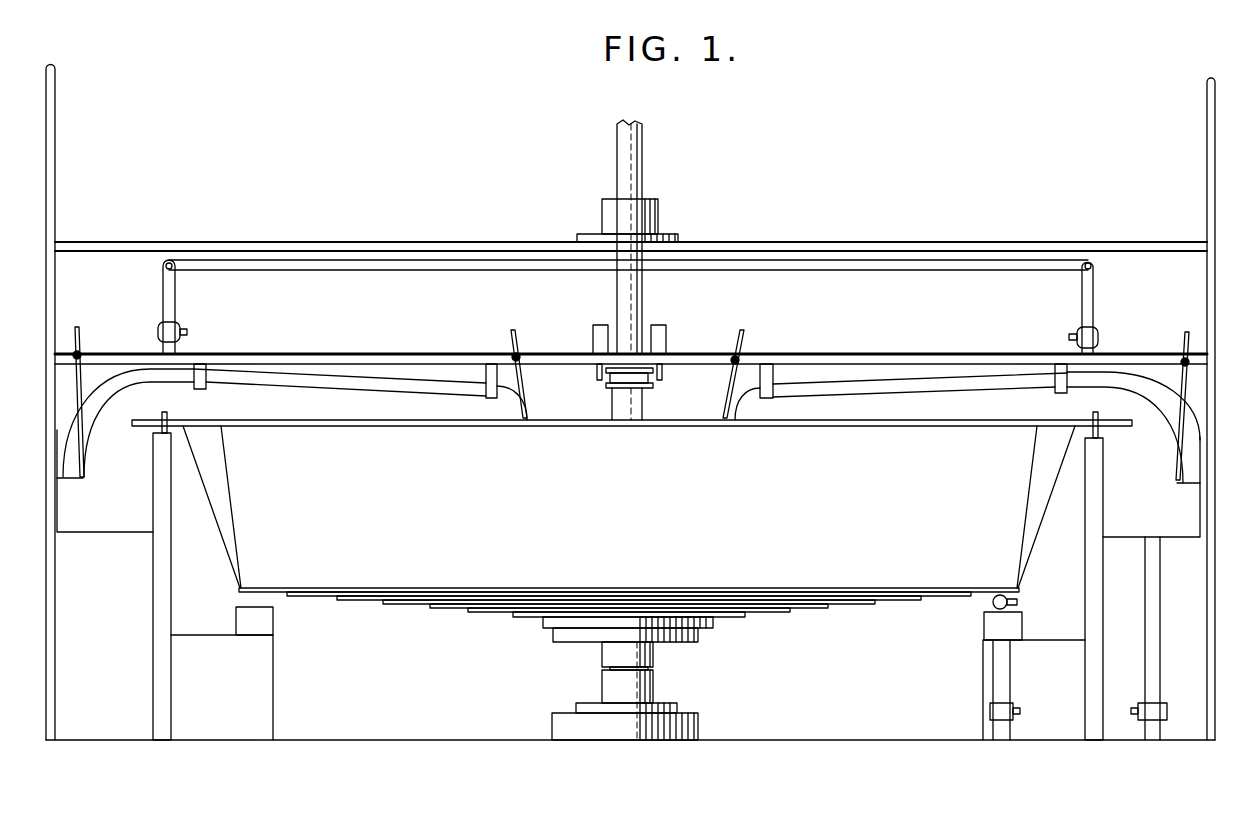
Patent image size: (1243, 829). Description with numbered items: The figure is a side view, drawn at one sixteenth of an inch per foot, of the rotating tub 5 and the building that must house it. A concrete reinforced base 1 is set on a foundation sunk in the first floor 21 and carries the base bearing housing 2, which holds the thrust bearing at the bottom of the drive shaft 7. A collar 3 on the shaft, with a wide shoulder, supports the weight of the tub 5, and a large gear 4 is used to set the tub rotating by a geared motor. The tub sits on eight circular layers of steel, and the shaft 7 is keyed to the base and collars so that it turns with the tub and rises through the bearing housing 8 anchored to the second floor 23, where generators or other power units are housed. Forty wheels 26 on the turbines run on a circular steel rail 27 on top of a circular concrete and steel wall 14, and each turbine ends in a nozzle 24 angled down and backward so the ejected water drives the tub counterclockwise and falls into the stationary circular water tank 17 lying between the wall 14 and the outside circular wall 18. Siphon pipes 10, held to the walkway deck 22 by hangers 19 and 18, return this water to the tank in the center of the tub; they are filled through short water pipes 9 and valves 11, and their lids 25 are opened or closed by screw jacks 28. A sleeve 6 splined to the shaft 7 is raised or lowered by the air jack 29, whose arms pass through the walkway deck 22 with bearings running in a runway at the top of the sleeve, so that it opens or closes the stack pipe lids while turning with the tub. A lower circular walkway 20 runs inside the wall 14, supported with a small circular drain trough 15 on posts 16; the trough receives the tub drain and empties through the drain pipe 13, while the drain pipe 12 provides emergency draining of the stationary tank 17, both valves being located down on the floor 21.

The concrete reinforced base 1 is at (662, 729).
The base bearing housing 2 is at (652, 688).
The collar 3 is at (652, 656).
The large gear 4 is at (712, 622).
The tub 5 is at (637, 528).
The sleeve 6 is at (640, 398).
The drive shaft 7 is at (628, 172).
The bearing housing 8 is at (630, 224).
The short water pipes 9 is at (172, 298).
The siphon pipe 10 is at (321, 378).
The drain valve 11 is at (187, 340).
The drain pipe 12 is at (1161, 621).
The drain pipe 13 is at (1011, 681).
The circular wall 14 is at (172, 681).
The circular drain trough 15 is at (629, 617).
The posts 16 is at (274, 681).
The stationary circular water tank 17 is at (106, 520).
The outside circular wall 18 is at (56, 682).
The hangers 19 is at (485, 397).
The circular walkway 20 is at (208, 636).
The floor 21 is at (792, 730).
The walkway deck 22 is at (886, 353).
The second floor 23 is at (882, 242).
The nozzle 24 is at (134, 428).
The siphon lid 25 is at (88, 480).
The wheel 26 is at (166, 415).
The circular steel rail 27 is at (180, 434).
The screw jack 28 is at (83, 346).
The air jack 29 is at (590, 331).